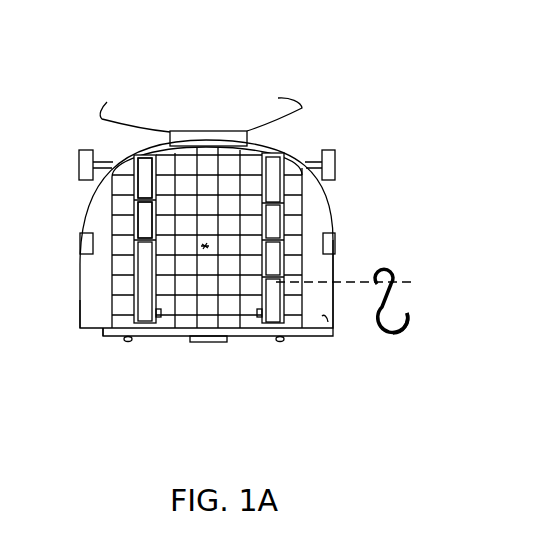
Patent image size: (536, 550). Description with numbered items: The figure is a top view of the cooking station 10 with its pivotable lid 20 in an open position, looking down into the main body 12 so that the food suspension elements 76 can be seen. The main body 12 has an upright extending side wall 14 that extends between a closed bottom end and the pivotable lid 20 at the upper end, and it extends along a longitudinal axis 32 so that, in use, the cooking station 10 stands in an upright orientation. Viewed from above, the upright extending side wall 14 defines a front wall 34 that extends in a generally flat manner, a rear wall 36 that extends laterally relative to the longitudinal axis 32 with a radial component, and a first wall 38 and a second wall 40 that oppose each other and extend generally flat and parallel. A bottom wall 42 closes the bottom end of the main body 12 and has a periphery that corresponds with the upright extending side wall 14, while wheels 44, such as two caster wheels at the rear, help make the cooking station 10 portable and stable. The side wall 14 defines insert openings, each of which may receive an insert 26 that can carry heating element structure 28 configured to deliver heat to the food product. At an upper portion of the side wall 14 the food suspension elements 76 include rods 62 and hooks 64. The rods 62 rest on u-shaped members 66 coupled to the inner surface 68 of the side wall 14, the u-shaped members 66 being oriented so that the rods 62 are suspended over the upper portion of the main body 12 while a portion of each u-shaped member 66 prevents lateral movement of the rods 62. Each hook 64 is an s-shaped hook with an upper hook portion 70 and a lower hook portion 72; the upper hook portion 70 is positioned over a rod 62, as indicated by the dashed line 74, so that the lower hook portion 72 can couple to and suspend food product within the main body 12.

The cooking station 10 is at (120, 82).
The main body 12 is at (342, 188).
The upright extending side wall 14 is at (353, 215).
The pivotable lid 20 is at (255, 129).
The insert 26 is at (247, 350).
The heating element structure 28 is at (100, 287).
The longitudinal axis 32 is at (205, 247).
The front wall 34 is at (100, 330).
The rear wall 36 is at (287, 155).
The first wall 38 is at (78, 262).
The second wall 40 is at (333, 272).
The bottom wall 42 is at (328, 322).
The wheels 44 is at (83, 148).
The rods 62 is at (272, 300).
The hooks 64 is at (138, 240).
The u-shaped members 66 is at (288, 157).
The inner surface 68 is at (80, 316).
The upper hook portion 70 is at (386, 266).
The lower hook portion 72 is at (408, 317).
The dashed line 74 is at (348, 284).
The food suspension elements 76 is at (125, 186).